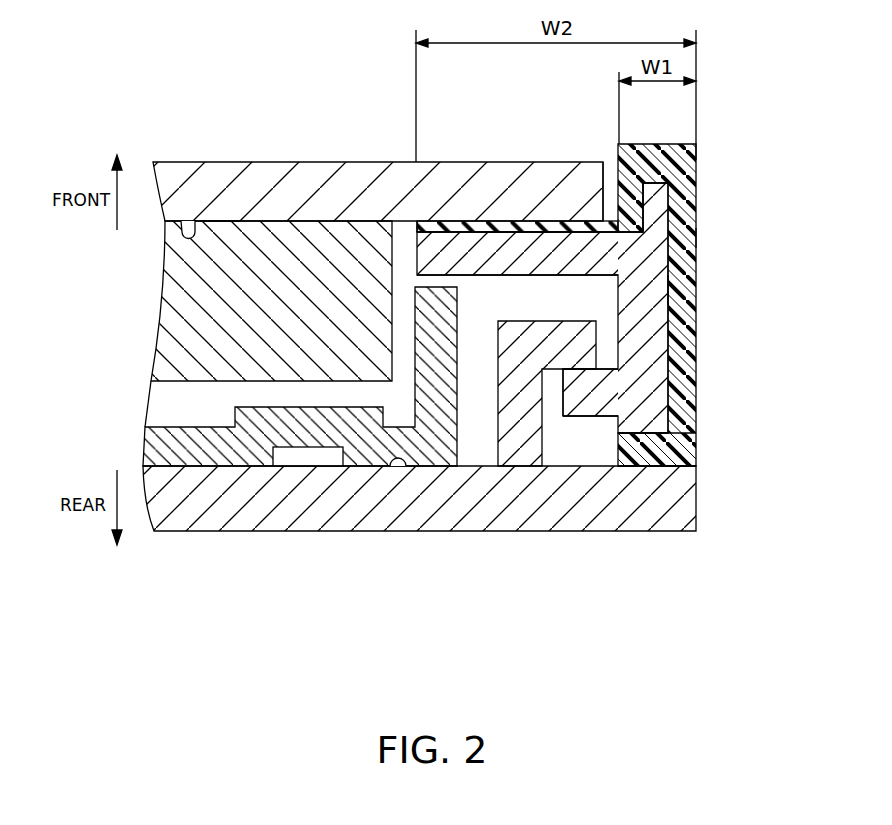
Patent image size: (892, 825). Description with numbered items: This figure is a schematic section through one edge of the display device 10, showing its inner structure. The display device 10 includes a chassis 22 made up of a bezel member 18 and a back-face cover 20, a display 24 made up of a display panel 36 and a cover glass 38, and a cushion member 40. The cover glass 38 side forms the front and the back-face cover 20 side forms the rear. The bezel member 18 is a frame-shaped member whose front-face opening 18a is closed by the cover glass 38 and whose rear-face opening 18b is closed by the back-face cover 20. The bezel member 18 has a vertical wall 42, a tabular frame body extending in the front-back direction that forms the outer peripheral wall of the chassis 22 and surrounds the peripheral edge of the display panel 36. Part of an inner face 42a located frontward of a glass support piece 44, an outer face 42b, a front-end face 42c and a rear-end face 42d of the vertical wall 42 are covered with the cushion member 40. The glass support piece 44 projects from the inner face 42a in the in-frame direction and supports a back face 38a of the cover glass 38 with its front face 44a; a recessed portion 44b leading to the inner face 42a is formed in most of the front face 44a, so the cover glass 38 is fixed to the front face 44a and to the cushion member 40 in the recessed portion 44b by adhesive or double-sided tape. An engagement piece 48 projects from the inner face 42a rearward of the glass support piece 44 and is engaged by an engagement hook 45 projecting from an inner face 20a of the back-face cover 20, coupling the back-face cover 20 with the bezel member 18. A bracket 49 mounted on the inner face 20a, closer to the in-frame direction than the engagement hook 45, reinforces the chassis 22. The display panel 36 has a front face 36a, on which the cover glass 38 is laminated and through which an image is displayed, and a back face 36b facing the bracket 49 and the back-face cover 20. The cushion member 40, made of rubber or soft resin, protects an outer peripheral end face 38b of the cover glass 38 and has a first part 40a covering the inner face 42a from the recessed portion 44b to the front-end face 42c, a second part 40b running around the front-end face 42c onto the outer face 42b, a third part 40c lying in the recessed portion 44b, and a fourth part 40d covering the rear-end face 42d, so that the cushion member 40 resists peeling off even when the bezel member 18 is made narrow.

The display device 10 is at (68, 90).
The bezel member 18 is at (680, 389).
The front-face opening 18a is at (402, 238).
The rear-face opening 18b is at (552, 401).
The back-face cover 20 is at (701, 496).
The inner face 20a is at (398, 464).
The chassis 22 is at (768, 377).
The display 24 is at (274, 116).
The display panel 36 is at (185, 310).
The front face 36a is at (215, 240).
The back face 36b is at (205, 385).
The cover glass 38 is at (341, 152).
The back face 38a is at (188, 228).
The outer peripheral end face 38b is at (604, 200).
The cushion member 40 is at (701, 256).
The first part 40a is at (614, 228).
The second part 40b is at (695, 152).
The third part 40c is at (455, 245).
The fourth part 40d is at (655, 446).
The vertical wall 42 is at (655, 318).
The inner face 42a is at (656, 201).
The outer face 42b is at (692, 292).
The front-end face 42c is at (669, 186).
The rear-end face 42d is at (637, 436).
The glass support piece 44 is at (490, 228).
The front face 44a is at (421, 224).
The recessed portion 44b is at (518, 228).
The engagement hook 45 is at (512, 427).
The engagement piece 48 is at (587, 403).
The bracket 49 is at (305, 435).